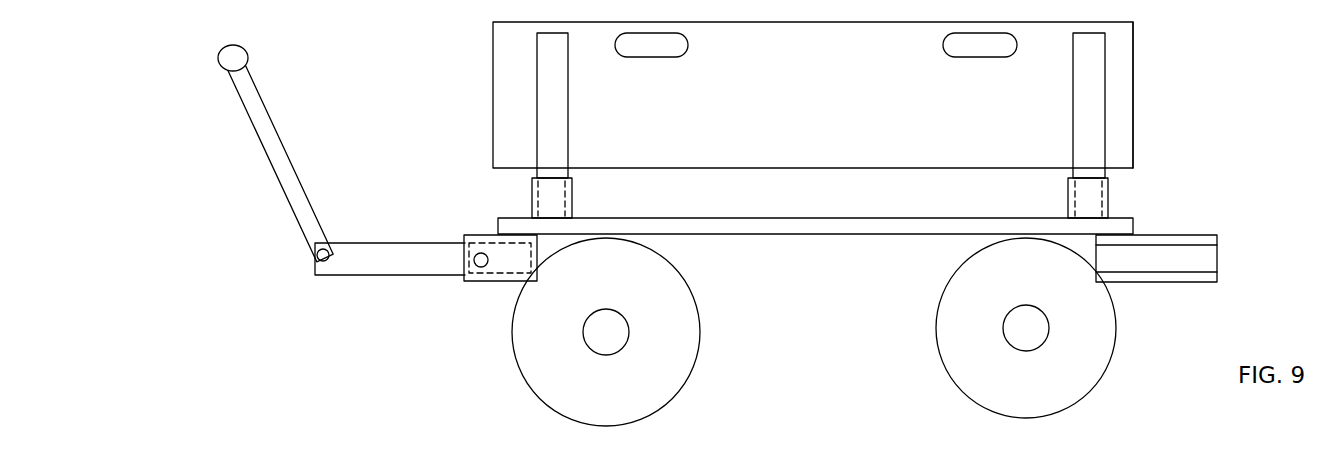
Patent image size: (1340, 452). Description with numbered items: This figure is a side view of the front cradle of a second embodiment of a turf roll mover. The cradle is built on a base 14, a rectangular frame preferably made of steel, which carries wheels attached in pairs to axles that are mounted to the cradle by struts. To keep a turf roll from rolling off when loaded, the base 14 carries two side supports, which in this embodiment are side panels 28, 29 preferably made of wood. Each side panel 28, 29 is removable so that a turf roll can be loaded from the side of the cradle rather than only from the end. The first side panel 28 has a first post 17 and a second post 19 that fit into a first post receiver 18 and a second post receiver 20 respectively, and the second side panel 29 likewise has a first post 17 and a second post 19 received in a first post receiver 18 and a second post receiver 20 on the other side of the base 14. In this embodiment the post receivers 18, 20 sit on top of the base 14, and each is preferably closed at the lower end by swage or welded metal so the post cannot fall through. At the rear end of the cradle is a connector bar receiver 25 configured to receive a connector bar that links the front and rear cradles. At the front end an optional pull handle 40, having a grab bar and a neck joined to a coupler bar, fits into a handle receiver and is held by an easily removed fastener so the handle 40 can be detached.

The base 14 is at (840, 228).
The first post 17 is at (545, 143).
The first post receiver 18 is at (545, 188).
The second post 19 is at (1085, 147).
The second post receiver 20 is at (1110, 202).
The connector bar receiver 25 is at (1190, 253).
The first side panel 28 is at (515, 85).
The second side panel 29 is at (1122, 80).
The pull handle 40 is at (234, 140).